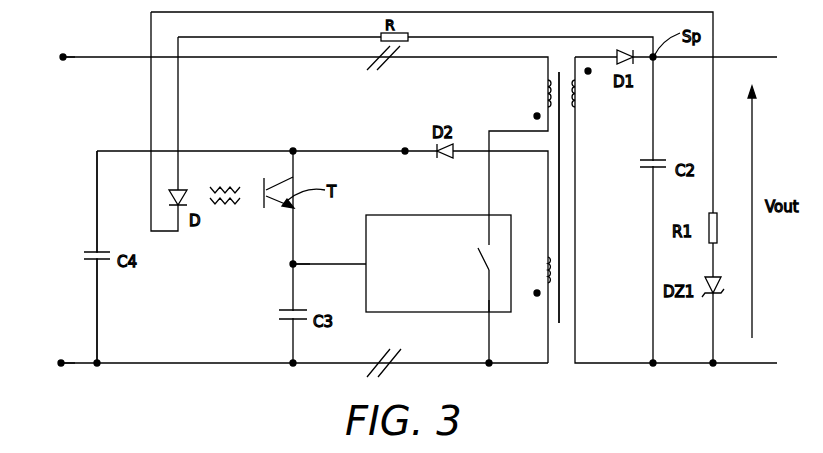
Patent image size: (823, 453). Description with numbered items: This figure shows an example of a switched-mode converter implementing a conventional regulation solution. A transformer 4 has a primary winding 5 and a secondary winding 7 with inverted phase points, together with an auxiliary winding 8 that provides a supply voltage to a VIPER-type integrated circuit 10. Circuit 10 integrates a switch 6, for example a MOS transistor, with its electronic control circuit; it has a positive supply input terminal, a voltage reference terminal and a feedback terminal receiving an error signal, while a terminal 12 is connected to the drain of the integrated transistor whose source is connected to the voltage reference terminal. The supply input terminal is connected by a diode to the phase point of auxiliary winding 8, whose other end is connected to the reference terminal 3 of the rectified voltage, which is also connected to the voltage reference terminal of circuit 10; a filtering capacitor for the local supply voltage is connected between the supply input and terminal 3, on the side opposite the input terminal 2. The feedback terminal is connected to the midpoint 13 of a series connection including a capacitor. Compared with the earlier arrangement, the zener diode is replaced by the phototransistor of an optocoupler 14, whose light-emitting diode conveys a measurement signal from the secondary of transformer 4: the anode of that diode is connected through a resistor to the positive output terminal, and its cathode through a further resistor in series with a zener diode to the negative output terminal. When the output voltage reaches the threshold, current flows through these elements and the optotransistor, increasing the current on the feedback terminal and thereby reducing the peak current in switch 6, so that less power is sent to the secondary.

The first input terminal 2 is at (62, 55).
The reference terminal 3 is at (61, 365).
The transformer 4 is at (522, 99).
The primary winding 5 is at (545, 88).
The switch 6 is at (478, 248).
The secondary winding 7 is at (578, 97).
The auxiliary winding 8 is at (545, 272).
The integrated circuit 10 is at (455, 317).
The terminal 12 is at (490, 214).
The midpoint 13 is at (292, 263).
The optocoupler 14 is at (216, 170).